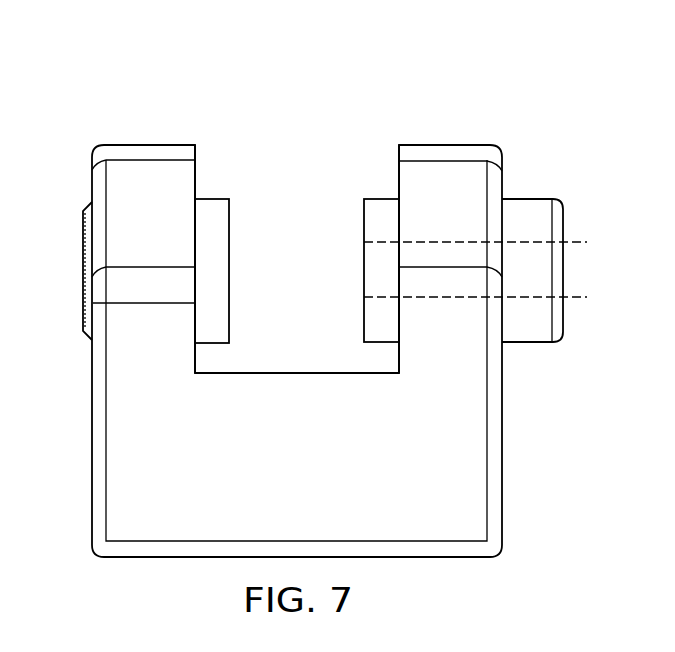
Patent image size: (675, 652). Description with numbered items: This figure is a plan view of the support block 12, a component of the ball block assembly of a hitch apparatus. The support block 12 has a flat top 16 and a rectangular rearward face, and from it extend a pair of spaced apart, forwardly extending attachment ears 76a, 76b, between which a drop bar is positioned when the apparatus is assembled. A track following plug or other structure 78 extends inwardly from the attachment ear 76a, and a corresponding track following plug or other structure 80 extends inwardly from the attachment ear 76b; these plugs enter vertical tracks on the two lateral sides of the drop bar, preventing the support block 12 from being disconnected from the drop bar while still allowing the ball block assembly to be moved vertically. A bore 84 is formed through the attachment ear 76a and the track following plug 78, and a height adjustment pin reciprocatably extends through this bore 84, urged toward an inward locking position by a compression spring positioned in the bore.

The support block 12 is at (196, 88).
The flat top 16 is at (474, 483).
The attachment ear 76a is at (453, 145).
The attachment ear 76b is at (93, 188).
The track following plug 78 is at (365, 270).
The track following plug 80 is at (230, 233).
The bore 84 is at (530, 297).